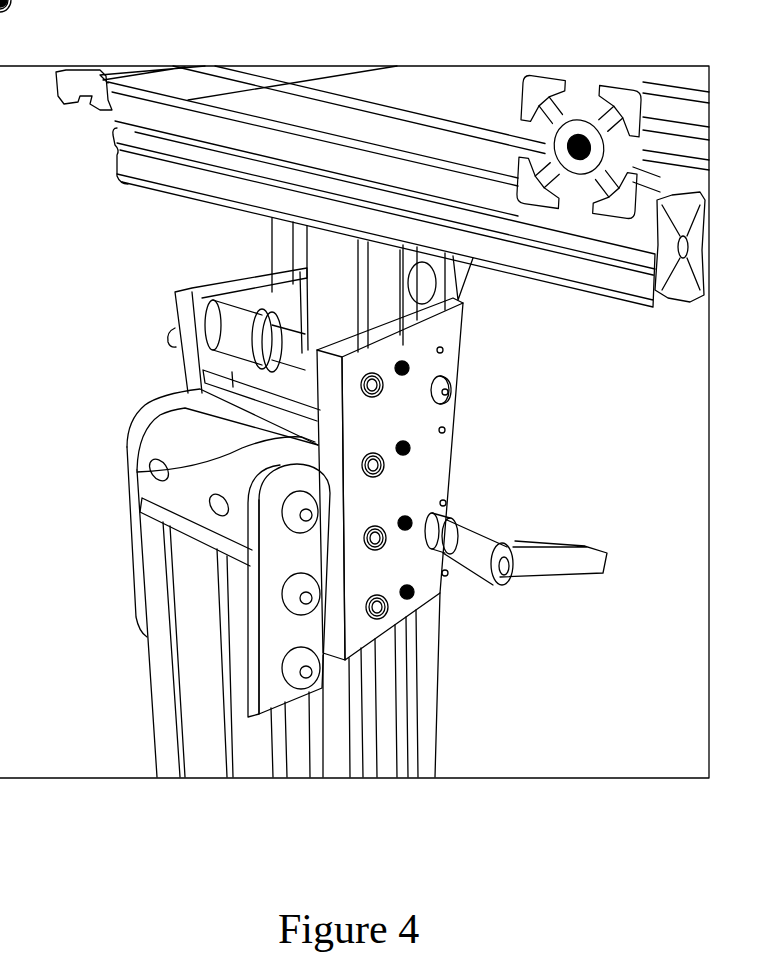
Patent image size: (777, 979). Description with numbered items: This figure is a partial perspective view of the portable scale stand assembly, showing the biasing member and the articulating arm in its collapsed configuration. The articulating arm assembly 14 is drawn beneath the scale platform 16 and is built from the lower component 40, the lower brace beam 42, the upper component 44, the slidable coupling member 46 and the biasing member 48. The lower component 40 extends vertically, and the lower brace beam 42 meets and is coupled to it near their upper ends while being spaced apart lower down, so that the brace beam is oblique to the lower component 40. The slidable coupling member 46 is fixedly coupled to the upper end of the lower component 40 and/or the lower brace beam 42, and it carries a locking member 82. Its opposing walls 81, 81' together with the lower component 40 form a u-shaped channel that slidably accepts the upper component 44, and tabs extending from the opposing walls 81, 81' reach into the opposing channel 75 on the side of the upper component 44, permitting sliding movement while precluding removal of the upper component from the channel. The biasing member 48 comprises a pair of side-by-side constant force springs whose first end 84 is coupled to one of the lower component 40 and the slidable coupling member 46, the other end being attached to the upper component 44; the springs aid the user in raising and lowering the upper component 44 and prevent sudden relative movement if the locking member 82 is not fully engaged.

The scale platform 16 is at (420, 142).
The upper component 44 is at (276, 238).
The opposing wall 81' is at (199, 330).
The biasing member 48 is at (260, 366).
The first end 84 is at (222, 368).
The opposing wall 81 is at (210, 553).
The lower brace beam 42 is at (168, 612).
The slidable coupling member 46 is at (443, 455).
The locking member 82 is at (473, 538).
The articulating arm assembly 14 is at (452, 660).
The lower component 40 is at (386, 720).
The opposing channel 75 is at (408, 715).